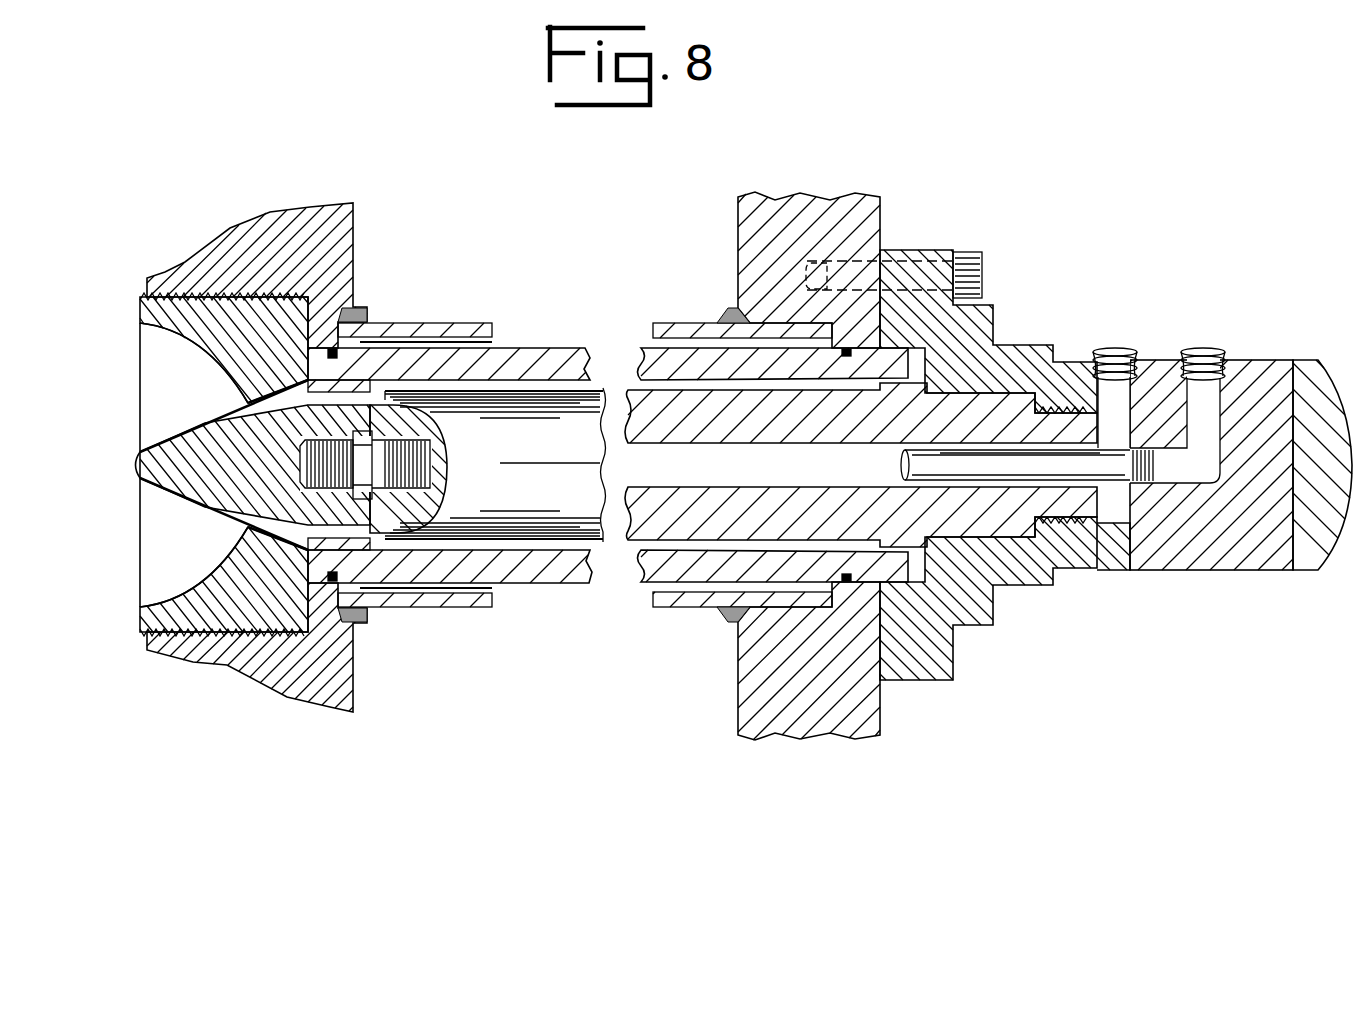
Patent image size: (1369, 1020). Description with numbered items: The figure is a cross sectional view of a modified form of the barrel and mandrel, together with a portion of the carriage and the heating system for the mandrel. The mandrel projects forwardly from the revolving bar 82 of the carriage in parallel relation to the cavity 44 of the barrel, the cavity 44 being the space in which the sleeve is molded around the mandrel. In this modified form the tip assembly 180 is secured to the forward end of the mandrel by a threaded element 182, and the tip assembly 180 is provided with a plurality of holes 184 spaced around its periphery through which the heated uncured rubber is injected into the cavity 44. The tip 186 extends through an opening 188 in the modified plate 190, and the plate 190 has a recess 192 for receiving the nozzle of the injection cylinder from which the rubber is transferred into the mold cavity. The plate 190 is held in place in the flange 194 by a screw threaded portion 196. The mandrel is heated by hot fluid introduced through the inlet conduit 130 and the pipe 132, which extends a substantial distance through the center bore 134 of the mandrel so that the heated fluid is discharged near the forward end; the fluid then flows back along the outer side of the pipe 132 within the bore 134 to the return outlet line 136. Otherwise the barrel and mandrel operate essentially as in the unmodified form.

The cavity 44 is at (688, 313).
The revolving bar 82 is at (752, 230).
The inlet conduit 130 is at (1205, 352).
The pipe 132 is at (900, 466).
The center bore 134 is at (742, 480).
The return outlet line 136 is at (1112, 350).
The tip assembly 180 is at (185, 509).
The threaded element 182 is at (423, 465).
The holes 184 is at (345, 392).
The tip 186 is at (137, 462).
The opening 188 is at (248, 526).
The modified plate 190 is at (150, 618).
The recess 192 is at (150, 565).
The flange 194 is at (287, 670).
The screw threaded portion 196 is at (198, 640).